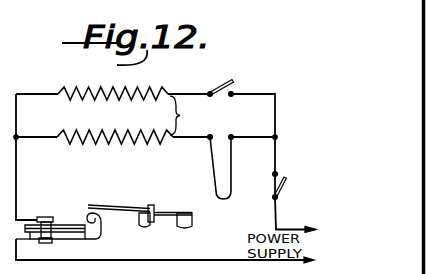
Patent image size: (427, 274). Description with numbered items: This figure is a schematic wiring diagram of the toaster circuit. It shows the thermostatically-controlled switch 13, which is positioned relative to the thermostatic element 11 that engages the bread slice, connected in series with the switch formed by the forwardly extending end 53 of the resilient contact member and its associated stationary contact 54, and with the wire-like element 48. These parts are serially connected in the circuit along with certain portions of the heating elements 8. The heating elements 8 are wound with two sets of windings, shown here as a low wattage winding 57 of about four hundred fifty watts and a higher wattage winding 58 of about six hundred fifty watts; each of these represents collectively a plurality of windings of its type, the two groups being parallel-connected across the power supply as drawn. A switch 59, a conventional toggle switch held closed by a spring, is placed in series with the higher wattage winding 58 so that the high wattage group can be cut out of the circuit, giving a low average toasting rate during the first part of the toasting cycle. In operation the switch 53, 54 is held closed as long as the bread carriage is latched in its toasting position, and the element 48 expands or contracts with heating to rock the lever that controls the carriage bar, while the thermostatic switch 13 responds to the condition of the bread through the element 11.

The higher wattage winding 58 is at (116, 89).
The low wattage winding 57 is at (114, 145).
The heating elements 8 is at (181, 115).
The switch 59 is at (222, 98).
The wire-like element 48 is at (212, 179).
The stationary contact 54 is at (275, 175).
The forwardly extending end of the contact member 53 is at (280, 191).
The thermostatically-controlled switch 13 is at (55, 217).
The thermostatic element 11 is at (167, 217).